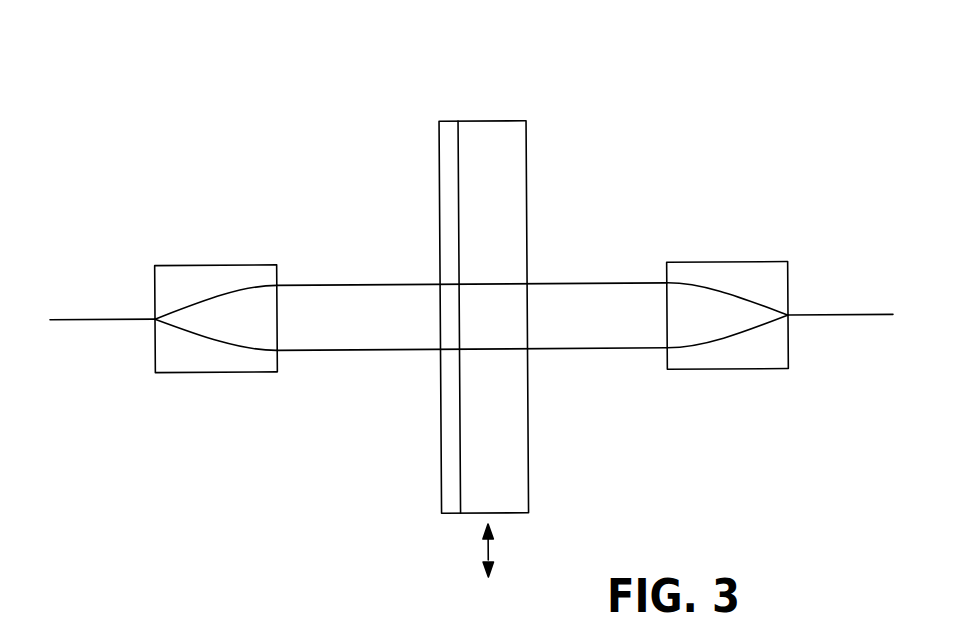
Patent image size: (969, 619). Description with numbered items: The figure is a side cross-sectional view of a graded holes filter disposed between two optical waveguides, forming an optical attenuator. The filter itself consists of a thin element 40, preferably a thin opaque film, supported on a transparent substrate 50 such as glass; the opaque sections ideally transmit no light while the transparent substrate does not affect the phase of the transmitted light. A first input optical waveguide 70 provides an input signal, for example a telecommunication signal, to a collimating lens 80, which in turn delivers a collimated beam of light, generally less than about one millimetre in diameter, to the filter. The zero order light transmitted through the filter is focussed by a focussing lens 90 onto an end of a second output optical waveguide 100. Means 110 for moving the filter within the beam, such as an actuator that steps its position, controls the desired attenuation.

The thin element 40 is at (450, 121).
The substrate 50 is at (493, 121).
The first input optical waveguide 70 is at (103, 316).
The collimating lens 80 is at (232, 264).
The focussing lens 90 is at (732, 264).
The second output optical waveguide 100 is at (850, 316).
The means for moving the filter 110 is at (488, 550).